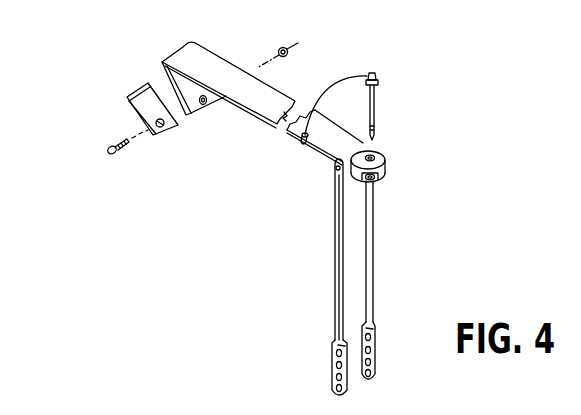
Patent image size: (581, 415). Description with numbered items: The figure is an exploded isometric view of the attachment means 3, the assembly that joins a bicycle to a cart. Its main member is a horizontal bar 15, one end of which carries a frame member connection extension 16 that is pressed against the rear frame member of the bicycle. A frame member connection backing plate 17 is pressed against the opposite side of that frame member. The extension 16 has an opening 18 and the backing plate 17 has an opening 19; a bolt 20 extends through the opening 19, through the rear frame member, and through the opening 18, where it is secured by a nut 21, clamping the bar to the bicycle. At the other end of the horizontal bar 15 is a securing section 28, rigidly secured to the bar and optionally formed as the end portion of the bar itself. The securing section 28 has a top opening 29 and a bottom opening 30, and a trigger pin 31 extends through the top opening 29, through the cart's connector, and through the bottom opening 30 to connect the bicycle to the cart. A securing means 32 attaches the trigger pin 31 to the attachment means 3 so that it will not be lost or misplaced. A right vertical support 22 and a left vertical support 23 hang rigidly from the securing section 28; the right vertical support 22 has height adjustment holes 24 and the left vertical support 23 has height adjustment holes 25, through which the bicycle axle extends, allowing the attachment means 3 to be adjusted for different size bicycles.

The attachment means 3 is at (205, 227).
The horizontal bar 15 is at (220, 68).
The frame member connection extension 16 is at (170, 72).
The frame member connection backing plate 17 is at (137, 100).
The opening 18 is at (207, 105).
The opening 19 is at (163, 130).
The bolt 20 is at (110, 153).
The nut 21 is at (279, 48).
The right vertical support 22 is at (394, 280).
The left vertical support 23 is at (315, 277).
The height adjustment holes 24 is at (375, 370).
The height adjustment holes 25 is at (332, 367).
The securing section 28 is at (387, 162).
The top opening 29 is at (380, 153).
The bottom opening 30 is at (380, 177).
The trigger pin 31 is at (375, 108).
The securing means 32 is at (323, 102).